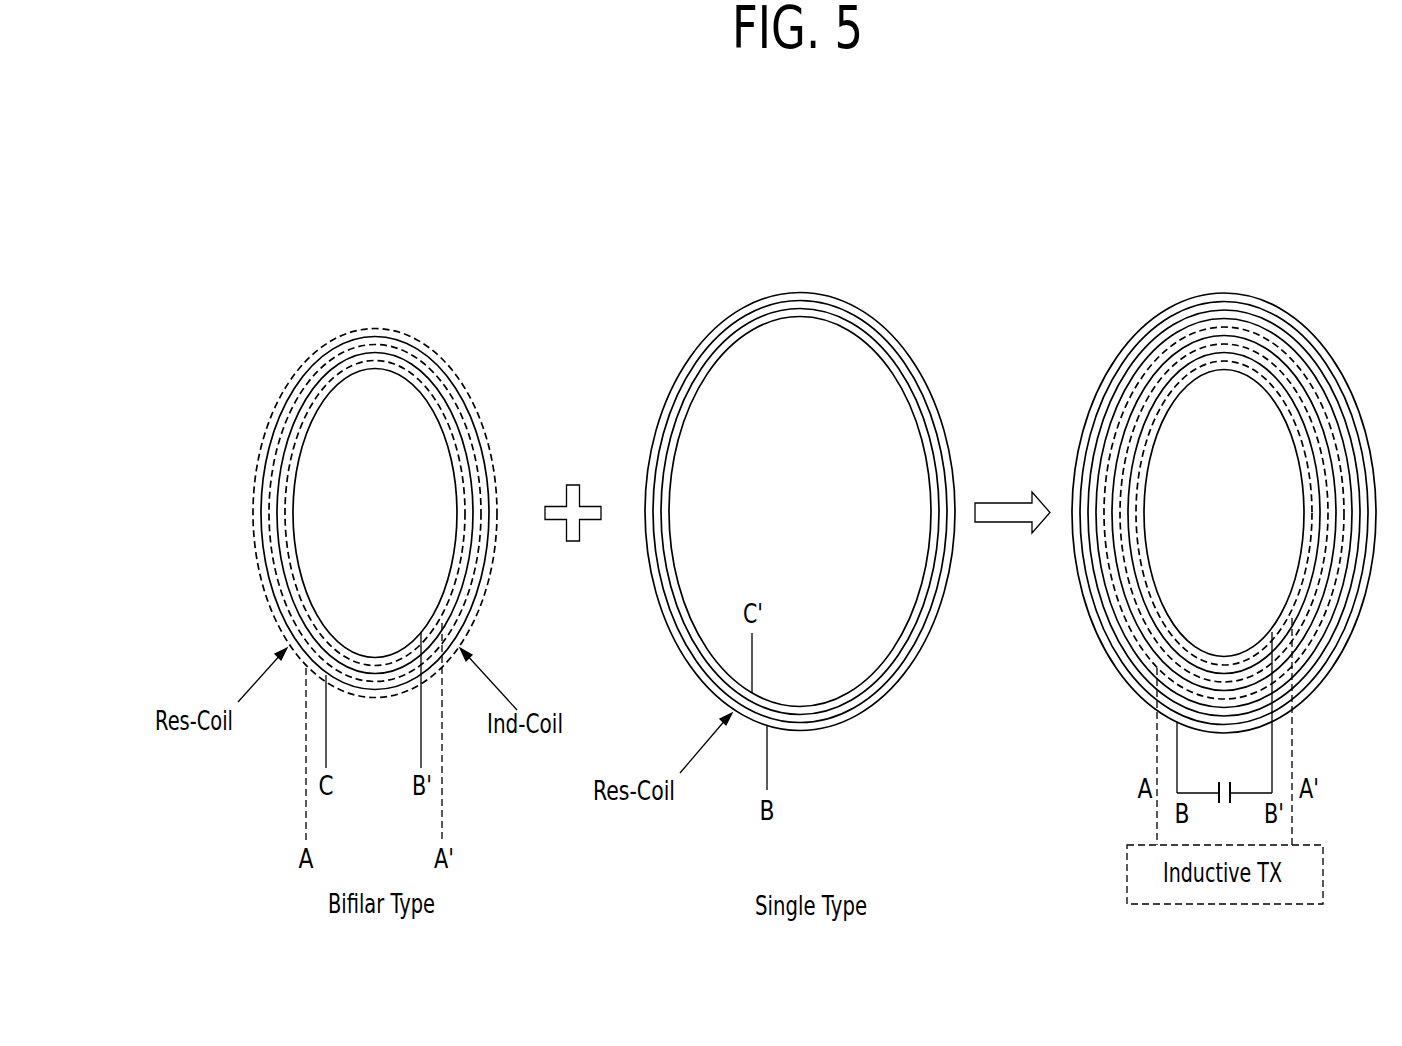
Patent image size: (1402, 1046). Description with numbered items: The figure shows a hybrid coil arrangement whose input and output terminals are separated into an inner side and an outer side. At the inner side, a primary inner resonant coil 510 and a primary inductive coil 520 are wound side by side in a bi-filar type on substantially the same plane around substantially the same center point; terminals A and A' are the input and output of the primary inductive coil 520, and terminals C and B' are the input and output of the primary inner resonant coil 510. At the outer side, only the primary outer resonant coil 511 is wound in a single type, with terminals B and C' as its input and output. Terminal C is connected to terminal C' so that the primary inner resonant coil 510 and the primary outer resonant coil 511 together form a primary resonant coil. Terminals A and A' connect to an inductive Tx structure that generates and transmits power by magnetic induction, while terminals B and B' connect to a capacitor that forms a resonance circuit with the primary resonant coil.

The primary inner resonant coil 510 is at (396, 338).
The primary inductive coil 520 is at (328, 340).
The primary outer resonant coil 511 is at (797, 292).